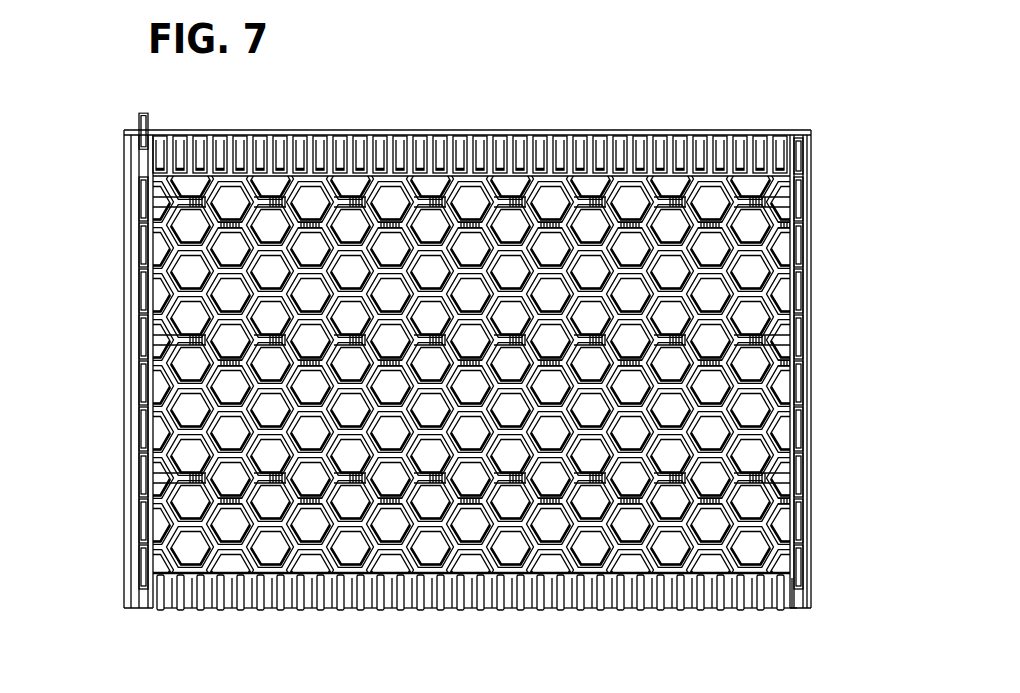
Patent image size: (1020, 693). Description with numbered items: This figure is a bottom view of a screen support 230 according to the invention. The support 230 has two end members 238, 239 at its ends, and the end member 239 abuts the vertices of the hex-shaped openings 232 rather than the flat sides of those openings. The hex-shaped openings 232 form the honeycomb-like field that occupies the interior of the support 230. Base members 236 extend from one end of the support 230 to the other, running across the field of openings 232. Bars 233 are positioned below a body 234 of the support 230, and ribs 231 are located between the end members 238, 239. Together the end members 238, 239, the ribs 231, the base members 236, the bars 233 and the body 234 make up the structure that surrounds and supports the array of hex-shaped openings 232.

The support 230 is at (123, 172).
The ribs 231 is at (813, 167).
The hex-shaped openings 232 is at (183, 412).
The bars 233 is at (656, 130).
The body 234 is at (592, 130).
The base members 236 is at (341, 198).
The end member 238 is at (131, 208).
The end member 239 is at (144, 240).